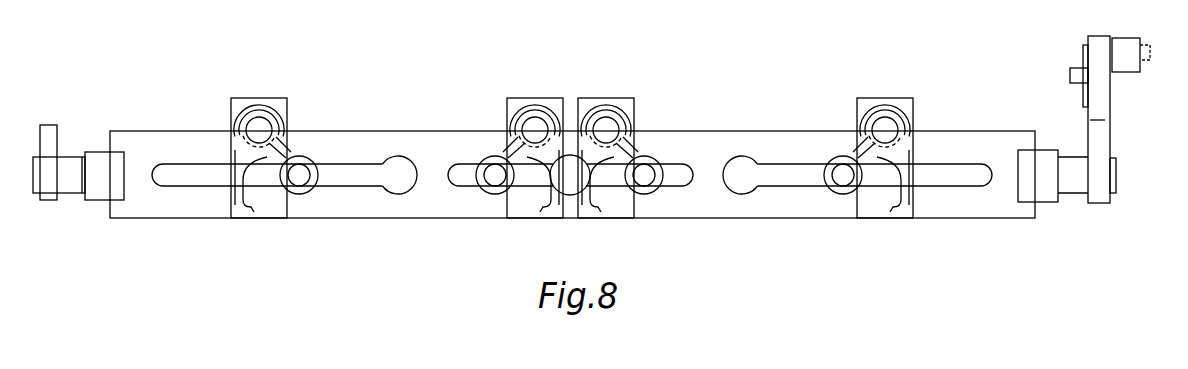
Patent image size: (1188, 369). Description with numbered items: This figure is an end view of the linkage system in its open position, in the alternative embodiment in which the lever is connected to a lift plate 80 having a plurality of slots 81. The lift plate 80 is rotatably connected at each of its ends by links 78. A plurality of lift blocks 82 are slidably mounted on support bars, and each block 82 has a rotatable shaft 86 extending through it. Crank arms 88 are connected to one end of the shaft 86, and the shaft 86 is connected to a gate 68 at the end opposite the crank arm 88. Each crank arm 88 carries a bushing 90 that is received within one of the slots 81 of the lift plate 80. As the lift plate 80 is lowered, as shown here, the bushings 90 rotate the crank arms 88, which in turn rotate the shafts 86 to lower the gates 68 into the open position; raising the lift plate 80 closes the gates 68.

The gate 68 is at (250, 218).
The link 78 is at (58, 130).
The lift plate 80 is at (708, 140).
The slot 81 is at (398, 155).
The lift block 82 is at (250, 97).
The rotatable shaft 86 is at (259, 117).
The crank arm 88 is at (288, 125).
The bushing 90 is at (300, 194).